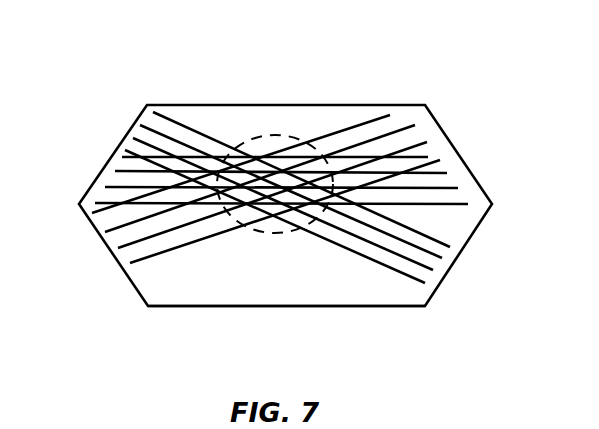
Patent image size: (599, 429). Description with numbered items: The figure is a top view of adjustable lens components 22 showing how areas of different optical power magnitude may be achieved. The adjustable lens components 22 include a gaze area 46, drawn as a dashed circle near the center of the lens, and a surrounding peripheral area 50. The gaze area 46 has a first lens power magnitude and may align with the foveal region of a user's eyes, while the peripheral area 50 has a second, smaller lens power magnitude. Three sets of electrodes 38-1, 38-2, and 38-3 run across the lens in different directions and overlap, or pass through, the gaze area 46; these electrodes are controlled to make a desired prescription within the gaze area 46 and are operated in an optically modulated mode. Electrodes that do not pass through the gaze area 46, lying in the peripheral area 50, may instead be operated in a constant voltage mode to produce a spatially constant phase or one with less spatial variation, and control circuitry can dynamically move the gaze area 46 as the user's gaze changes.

The adjustable lens components 22 is at (86, 129).
The electrode 38-1 is at (460, 188).
The electrode 38-2 is at (348, 125).
The electrode 38-3 is at (200, 130).
The gaze area 46 is at (277, 233).
The peripheral area 50 is at (370, 290).